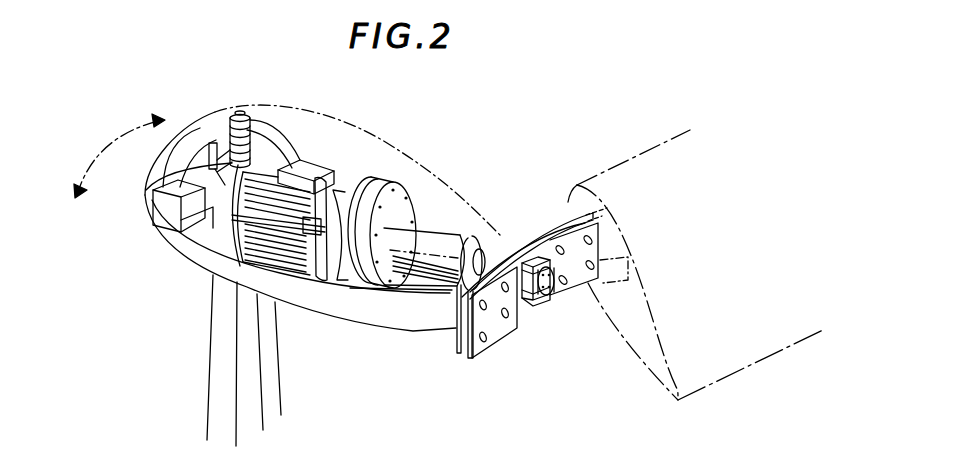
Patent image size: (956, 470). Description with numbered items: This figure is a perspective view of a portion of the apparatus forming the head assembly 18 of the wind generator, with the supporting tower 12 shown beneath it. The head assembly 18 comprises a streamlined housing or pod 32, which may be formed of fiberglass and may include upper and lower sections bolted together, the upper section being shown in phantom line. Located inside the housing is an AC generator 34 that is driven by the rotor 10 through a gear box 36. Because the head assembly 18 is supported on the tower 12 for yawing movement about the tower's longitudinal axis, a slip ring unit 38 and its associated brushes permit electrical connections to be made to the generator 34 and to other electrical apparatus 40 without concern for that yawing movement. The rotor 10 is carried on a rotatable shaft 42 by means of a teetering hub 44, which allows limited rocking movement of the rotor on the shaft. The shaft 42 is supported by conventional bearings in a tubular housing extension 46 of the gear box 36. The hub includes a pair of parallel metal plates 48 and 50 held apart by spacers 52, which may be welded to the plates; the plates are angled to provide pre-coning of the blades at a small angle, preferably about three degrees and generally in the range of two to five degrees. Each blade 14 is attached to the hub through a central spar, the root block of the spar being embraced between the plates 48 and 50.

The rotor 10 is at (551, 174).
The tower 12 is at (198, 372).
The blade 14 is at (641, 160).
The head assembly 18 is at (167, 252).
The housing or pod 32 is at (352, 318).
The AC generator 34 is at (288, 262).
The gear box 36 is at (394, 184).
The slip ring unit 38 is at (239, 113).
The electrical apparatus 40 is at (157, 205).
The rotatable shaft 42 is at (477, 240).
The teetering hub 44 is at (539, 309).
The tubular housing extension 46 is at (432, 238).
The metal plate 48 is at (578, 273).
The metal plate 50 is at (537, 234).
The spacers 52 is at (570, 226).